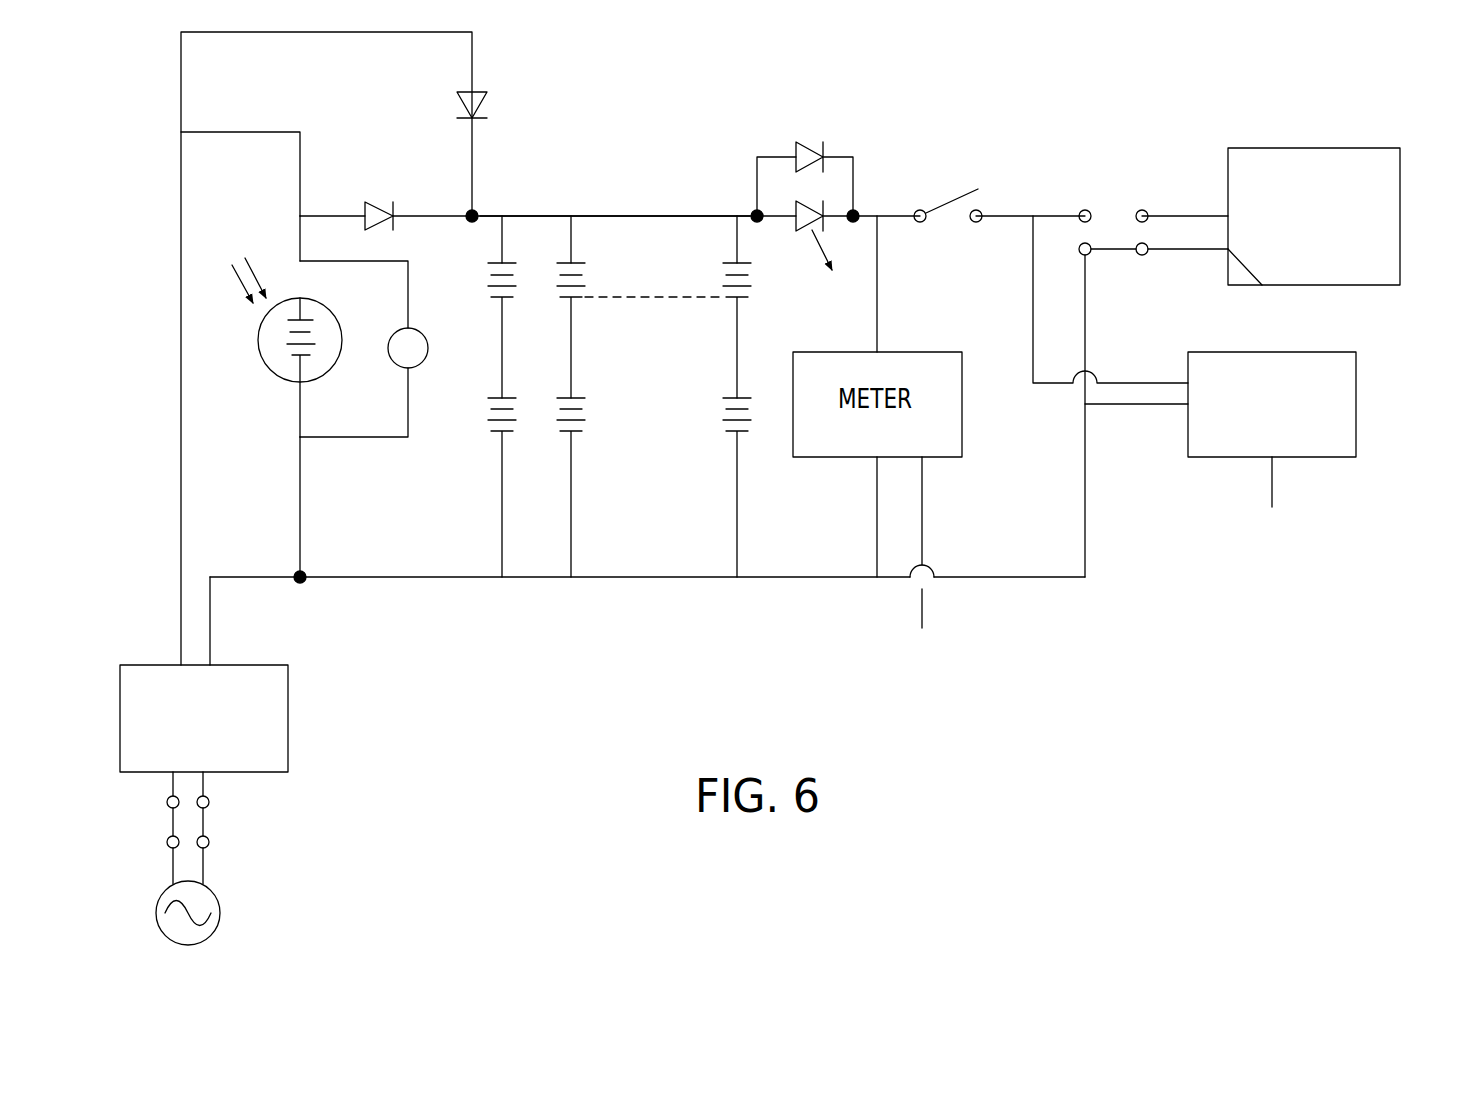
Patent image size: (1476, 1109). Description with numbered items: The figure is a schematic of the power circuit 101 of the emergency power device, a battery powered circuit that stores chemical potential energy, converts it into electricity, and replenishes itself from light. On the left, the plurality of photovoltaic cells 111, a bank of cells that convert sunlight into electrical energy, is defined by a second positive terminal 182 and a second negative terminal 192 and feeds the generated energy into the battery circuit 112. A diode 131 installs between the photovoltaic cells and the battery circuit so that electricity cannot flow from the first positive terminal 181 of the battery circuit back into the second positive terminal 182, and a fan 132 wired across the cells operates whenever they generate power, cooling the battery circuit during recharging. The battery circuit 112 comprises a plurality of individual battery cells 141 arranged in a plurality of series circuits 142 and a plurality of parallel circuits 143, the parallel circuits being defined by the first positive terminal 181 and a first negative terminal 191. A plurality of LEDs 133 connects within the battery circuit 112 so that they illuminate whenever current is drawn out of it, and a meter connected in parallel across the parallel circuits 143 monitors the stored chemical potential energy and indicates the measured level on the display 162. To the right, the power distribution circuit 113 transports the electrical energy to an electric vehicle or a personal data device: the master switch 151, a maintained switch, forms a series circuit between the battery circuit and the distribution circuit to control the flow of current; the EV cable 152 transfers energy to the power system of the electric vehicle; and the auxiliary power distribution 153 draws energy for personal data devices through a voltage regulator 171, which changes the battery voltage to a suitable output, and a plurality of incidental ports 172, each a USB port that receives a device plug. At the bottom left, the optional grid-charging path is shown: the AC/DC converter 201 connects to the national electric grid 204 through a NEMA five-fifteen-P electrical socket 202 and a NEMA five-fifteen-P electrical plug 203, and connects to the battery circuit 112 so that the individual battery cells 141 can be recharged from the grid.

The power circuit 101 is at (380, 165).
The diode 131 is at (382, 200).
The second positive terminal 182 is at (300, 239).
The plurality of photovoltaic cells 111 is at (277, 375).
The fan 132 is at (390, 357).
The second negative terminal 192 is at (300, 450).
The battery circuit 112 is at (608, 207).
The first positive terminal 181 is at (737, 233).
The plurality of individual battery cells 141 is at (566, 393).
The plurality of series circuits 142 is at (586, 298).
The first negative terminal 191 is at (735, 540).
The plurality of parallel circuits 143 is at (619, 434).
The plurality of LEDs 133 is at (807, 140).
The master switch 151 is at (952, 200).
The power distribution circuit 113 is at (1143, 152).
The EV cable 152 is at (1112, 210).
The voltage regulator 171 is at (1358, 402).
The auxiliary power distribution 153 is at (1363, 442).
The plurality of incidental ports 172 is at (1272, 582).
The display 162 is at (917, 672).
The AC/DC converter 201 is at (289, 713).
The NEMA 5-15P electrical socket 202 is at (210, 802).
The NEMA 5-15P electrical plug 203 is at (210, 842).
The national electric grid 204 is at (220, 905).